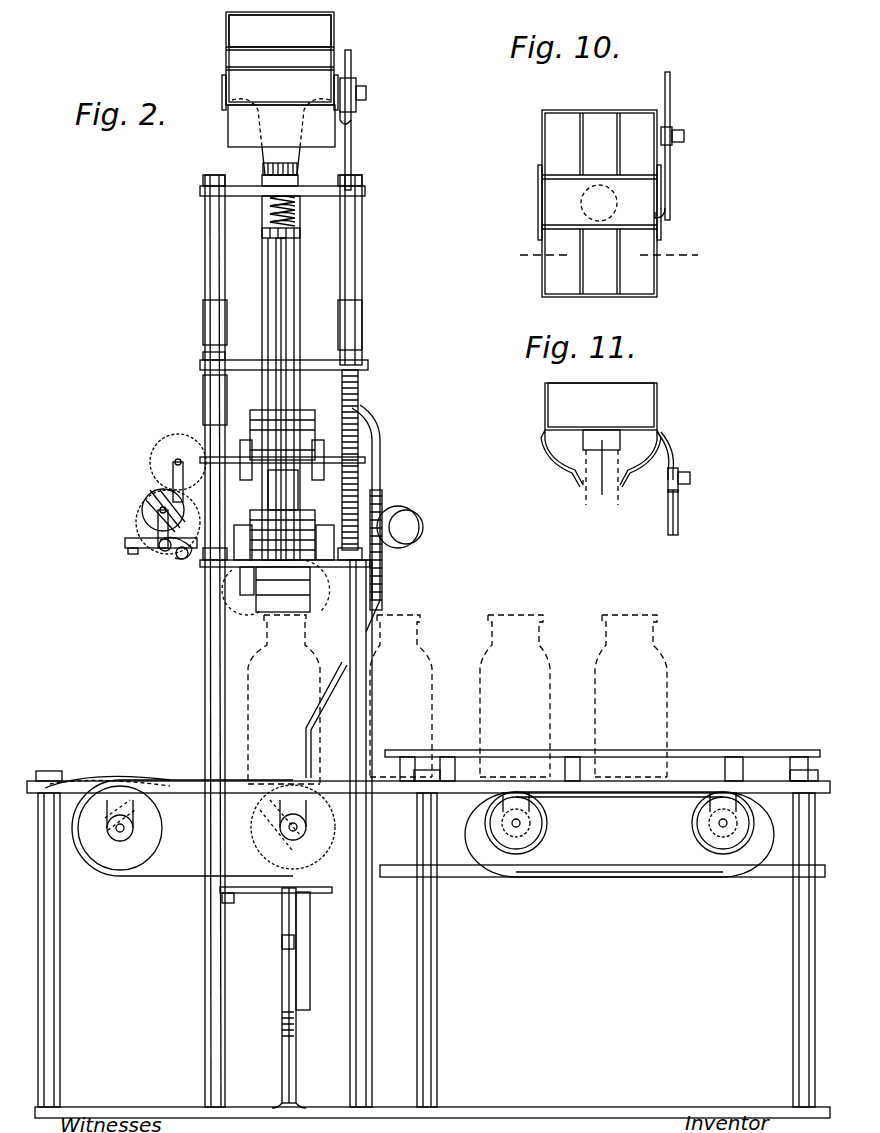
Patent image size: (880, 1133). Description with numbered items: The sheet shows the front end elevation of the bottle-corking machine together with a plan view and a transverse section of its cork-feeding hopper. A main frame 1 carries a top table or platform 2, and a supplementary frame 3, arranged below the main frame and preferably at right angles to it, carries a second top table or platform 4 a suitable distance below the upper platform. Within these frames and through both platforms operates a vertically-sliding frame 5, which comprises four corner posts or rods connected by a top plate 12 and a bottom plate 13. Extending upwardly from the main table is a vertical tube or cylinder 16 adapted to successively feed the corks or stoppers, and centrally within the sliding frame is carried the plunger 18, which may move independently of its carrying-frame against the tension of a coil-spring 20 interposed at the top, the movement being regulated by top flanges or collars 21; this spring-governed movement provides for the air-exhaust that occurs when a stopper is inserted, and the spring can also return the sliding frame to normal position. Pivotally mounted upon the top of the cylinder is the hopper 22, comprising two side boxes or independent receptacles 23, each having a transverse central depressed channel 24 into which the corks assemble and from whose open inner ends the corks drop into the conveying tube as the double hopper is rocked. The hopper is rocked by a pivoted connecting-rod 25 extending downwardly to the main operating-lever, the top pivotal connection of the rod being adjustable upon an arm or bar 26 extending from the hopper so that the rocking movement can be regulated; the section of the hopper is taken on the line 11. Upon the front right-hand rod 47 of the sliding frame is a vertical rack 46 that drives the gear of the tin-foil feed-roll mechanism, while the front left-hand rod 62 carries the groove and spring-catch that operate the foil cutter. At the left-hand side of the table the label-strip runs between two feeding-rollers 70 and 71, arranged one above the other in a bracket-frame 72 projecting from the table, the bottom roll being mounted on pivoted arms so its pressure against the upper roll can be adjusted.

In FIG. 2, the main frame 1 is at (206, 680).
In FIG. 2, the top table or platform 2 is at (272, 565).
In FIG. 2, the supplementary frame 3 is at (432, 944).
In FIG. 2, the top table or platform 4 is at (776, 775).
In FIG. 2, the vertically-sliding frame 5 is at (205, 313).
In FIG. 10, the section line 11 is at (610, 255).
In FIG. 2, the top plate 12 is at (313, 186).
In FIG. 2, the bottom plate 13 is at (258, 893).
In FIG. 2, the vertical tube or cylinder 16 is at (296, 314).
In FIG. 2, the plunger 18 is at (288, 344).
In FIG. 2, the coil-spring 20 is at (296, 212).
In FIG. 2, the top flanges or collars 21 is at (300, 233).
In FIG. 2, the hopper 22 is at (224, 52).
In FIG. 10, the hopper 22 is at (583, 203).
In FIG. 11, the hopper 22 is at (618, 435).
In FIG. 2, the side boxes or independent receptacles 23 is at (280, 31).
In FIG. 10, the side boxes or independent receptacles 23 is at (613, 203).
In FIG. 11, the side boxes or independent receptacles 23 is at (601, 424).
In FIG. 10, the transverse central depressed channel 24 is at (599, 220).
In FIG. 11, the transverse central depressed channel 24 is at (602, 479).
In FIG. 2, the pivoted connecting-rod 25 is at (382, 474).
In FIG. 11, the pivoted connecting-rod 25 is at (690, 512).
In FIG. 10, the arm or bar 26 is at (671, 180).
In FIG. 11, the arm or bar 26 is at (666, 458).
In FIG. 2, the vertical rack 46 is at (359, 405).
In FIG. 2, the front right-hand rod 47 is at (362, 333).
In FIG. 2, the front left-hand rod 62 is at (207, 387).
In FIG. 2, the bottom feeding-roller 70 is at (160, 560).
In FIG. 2, the top feeding-roller 71 is at (160, 498).
In FIG. 2, the bracket-frame 72 is at (160, 528).